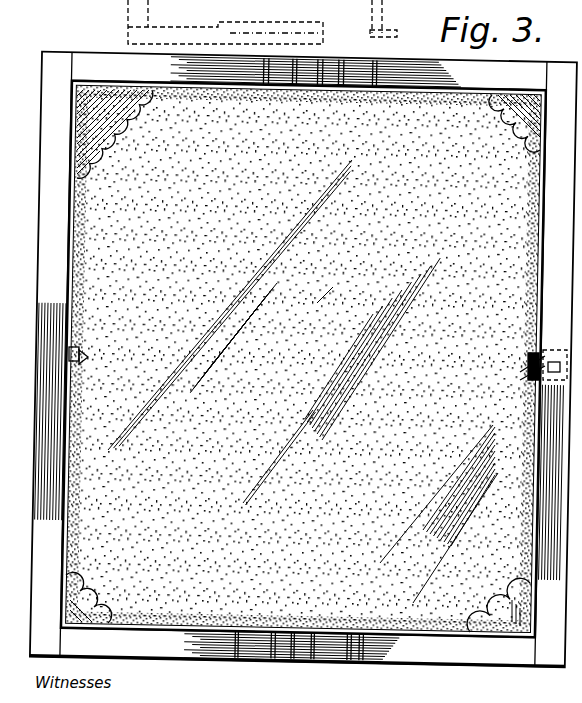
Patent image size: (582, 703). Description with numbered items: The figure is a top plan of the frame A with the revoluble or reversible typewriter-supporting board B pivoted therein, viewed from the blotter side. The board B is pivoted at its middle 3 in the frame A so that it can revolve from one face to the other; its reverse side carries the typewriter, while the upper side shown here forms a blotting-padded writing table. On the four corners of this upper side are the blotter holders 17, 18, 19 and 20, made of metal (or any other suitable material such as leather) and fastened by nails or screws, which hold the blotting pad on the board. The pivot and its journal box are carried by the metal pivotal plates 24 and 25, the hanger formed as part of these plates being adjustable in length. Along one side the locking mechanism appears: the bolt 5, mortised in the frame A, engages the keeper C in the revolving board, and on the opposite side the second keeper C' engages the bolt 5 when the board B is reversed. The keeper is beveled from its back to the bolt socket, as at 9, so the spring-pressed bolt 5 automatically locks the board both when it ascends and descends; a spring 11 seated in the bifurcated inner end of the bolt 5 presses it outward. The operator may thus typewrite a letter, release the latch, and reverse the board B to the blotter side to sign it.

The frame A is at (433, 59).
The revoluble or reversible board B is at (222, 602).
The keeper C is at (522, 366).
The keeper C' is at (94, 345).
The pivot at middle of board 3 is at (320, 62).
The bolt 5 is at (527, 377).
The bevel of keeper 9 is at (80, 360).
The spring 11 is at (527, 403).
The blotter holder 17 is at (100, 108).
The blotter holder 18 is at (523, 110).
The blotter holder 19 is at (513, 607).
The blotter holder 20 is at (88, 603).
The pivotal plate 24 is at (380, 85).
The pivotal plate 25 is at (380, 85).